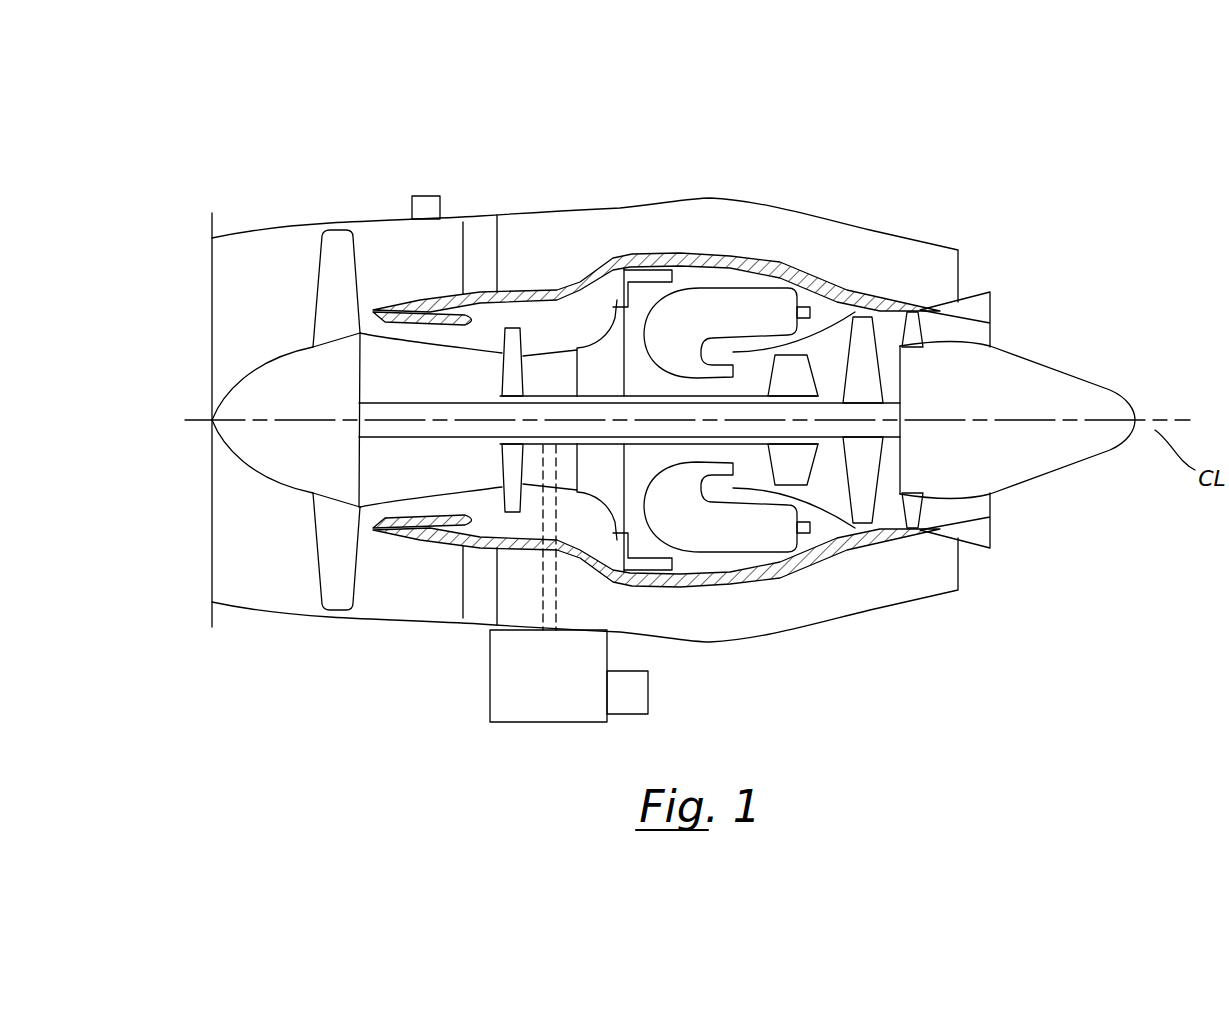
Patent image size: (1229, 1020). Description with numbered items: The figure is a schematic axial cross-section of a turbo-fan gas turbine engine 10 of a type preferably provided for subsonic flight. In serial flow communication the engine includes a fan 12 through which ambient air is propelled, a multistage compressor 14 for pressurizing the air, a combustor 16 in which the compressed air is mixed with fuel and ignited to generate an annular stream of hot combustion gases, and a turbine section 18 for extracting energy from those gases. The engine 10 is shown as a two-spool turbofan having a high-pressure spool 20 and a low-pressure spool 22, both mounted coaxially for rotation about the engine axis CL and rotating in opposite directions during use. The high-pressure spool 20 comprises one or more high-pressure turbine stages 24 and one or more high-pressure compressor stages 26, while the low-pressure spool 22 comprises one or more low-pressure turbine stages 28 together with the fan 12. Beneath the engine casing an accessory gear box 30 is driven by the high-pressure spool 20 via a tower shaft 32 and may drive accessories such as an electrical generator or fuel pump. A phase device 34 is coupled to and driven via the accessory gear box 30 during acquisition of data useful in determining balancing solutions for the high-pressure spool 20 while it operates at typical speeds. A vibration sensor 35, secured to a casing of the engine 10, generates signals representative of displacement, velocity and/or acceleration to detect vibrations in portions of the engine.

The gas turbine engine 10 is at (850, 156).
The fan 12 is at (330, 547).
The multistage compressor 14 is at (555, 340).
The combustor 16 is at (720, 303).
The turbine section 18 is at (828, 476).
The high-pressure spool 20 is at (640, 390).
The low-pressure spool 22 is at (407, 402).
The high-pressure turbine stages 24 is at (800, 365).
The high-pressure compressor stages 26 is at (511, 340).
The low-pressure turbine stages 28 is at (863, 327).
The accessory gear box 30 is at (490, 688).
The tower shaft 32 is at (542, 587).
The phase device 34 is at (648, 691).
The vibration sensor 35 is at (432, 195).